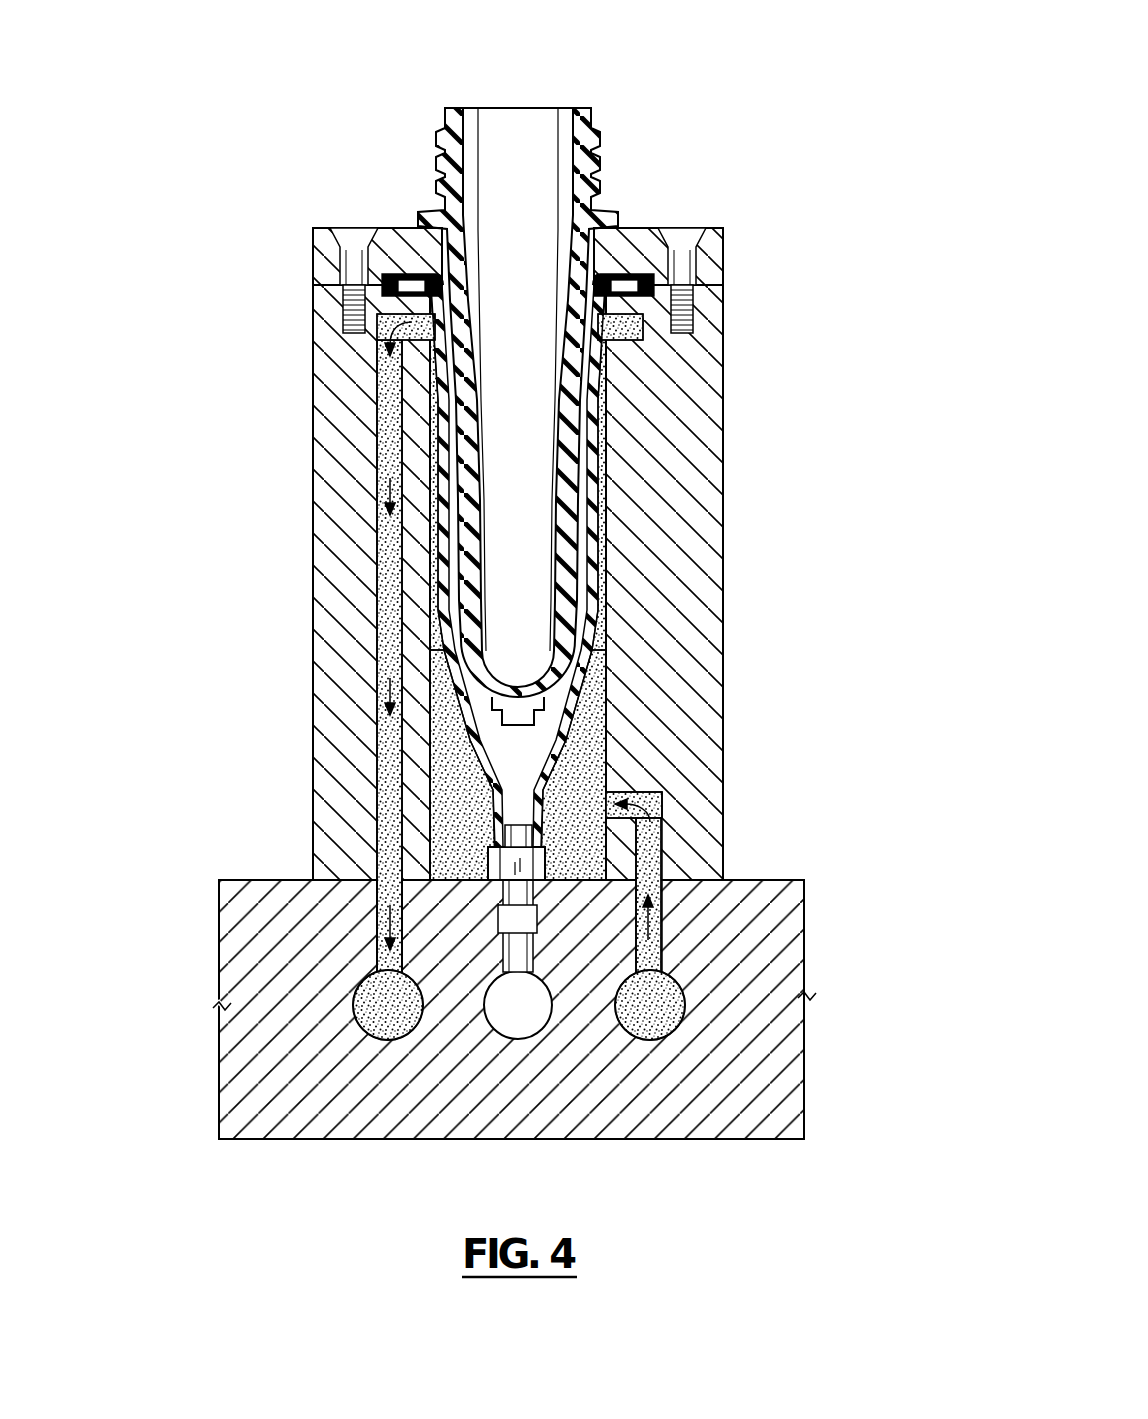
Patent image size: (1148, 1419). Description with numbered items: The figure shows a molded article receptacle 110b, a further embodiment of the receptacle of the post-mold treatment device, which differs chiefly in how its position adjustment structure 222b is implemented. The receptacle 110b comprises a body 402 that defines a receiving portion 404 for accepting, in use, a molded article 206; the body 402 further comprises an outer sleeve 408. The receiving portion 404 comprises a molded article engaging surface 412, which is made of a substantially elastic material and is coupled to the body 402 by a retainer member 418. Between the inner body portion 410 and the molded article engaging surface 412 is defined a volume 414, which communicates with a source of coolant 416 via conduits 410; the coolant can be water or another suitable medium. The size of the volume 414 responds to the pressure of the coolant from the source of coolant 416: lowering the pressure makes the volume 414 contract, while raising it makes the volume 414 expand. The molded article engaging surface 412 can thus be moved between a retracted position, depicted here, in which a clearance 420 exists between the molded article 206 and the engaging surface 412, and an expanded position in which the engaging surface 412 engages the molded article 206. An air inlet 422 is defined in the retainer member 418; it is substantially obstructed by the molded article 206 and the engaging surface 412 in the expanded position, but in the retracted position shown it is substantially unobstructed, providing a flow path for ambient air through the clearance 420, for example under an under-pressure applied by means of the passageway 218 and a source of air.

The molded article receptacle 110b is at (795, 515).
The molded article 206 is at (508, 145).
The passageway 218 is at (528, 962).
The position adjustment structure 222b is at (349, 644).
The body 402 is at (670, 643).
The receiving portion 404 is at (586, 406).
The outer sleeve 408 is at (342, 542).
The conduits 410 is at (643, 893).
The molded article engaging surface 412 is at (463, 710).
The volume 414 is at (463, 752).
The source of coolant 416 is at (670, 998).
The retainer member 418 is at (325, 260).
The clearance 420 is at (600, 600).
The air inlet 422 is at (417, 255).